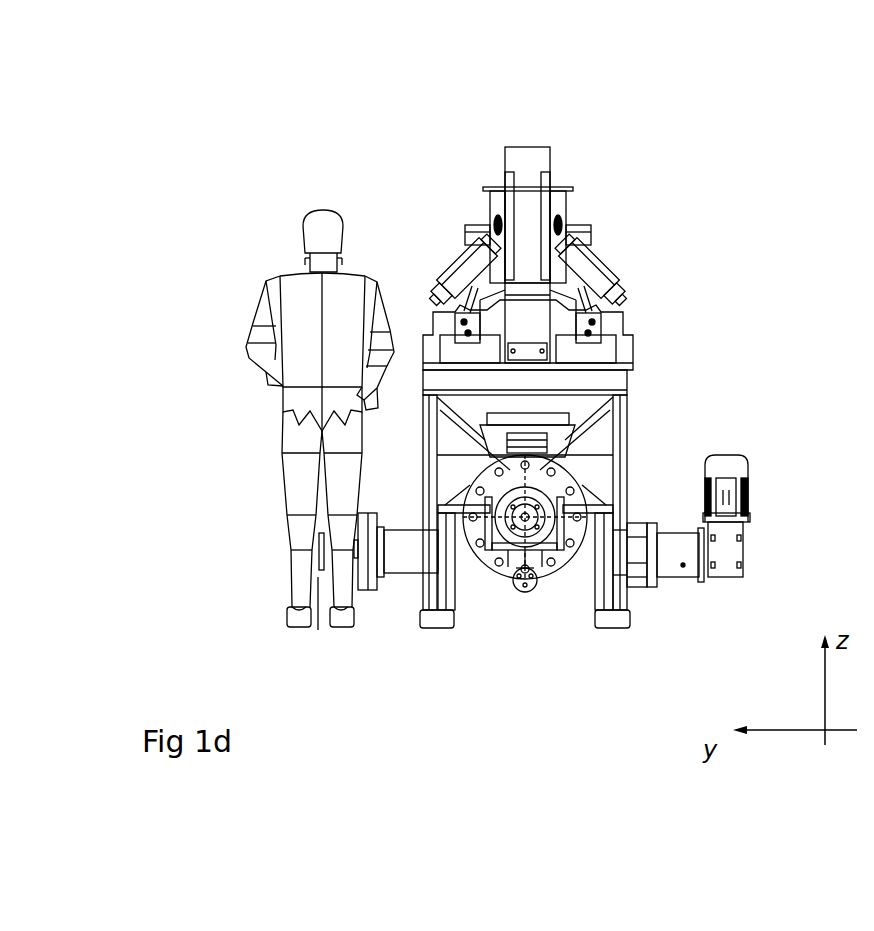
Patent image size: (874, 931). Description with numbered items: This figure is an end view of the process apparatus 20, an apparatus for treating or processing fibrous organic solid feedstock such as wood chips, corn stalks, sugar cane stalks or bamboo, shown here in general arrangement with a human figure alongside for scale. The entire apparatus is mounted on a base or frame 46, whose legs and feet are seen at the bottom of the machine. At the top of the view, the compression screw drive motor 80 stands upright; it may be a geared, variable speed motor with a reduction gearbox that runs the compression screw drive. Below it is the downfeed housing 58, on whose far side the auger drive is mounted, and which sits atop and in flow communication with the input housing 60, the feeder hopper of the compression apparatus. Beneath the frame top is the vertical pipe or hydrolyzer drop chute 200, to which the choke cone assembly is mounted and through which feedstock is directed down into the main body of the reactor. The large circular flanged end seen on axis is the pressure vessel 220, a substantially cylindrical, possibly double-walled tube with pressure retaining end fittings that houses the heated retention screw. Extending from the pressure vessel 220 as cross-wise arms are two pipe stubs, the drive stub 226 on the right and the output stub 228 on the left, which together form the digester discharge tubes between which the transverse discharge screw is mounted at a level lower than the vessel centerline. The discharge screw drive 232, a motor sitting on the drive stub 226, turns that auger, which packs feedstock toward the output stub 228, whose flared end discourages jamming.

The process apparatus 20 is at (268, 182).
The base or frame 46 is at (612, 630).
The downfeed housing 58 is at (567, 208).
The input housing 60 is at (568, 350).
The compression screw drive motor 80 is at (550, 160).
The hydrolyzer drop chute 200 is at (565, 435).
The pressure vessel 220 is at (605, 485).
The drive stub 226 is at (671, 575).
The output stub 228 is at (403, 568).
The discharge screw drive 232 is at (745, 495).